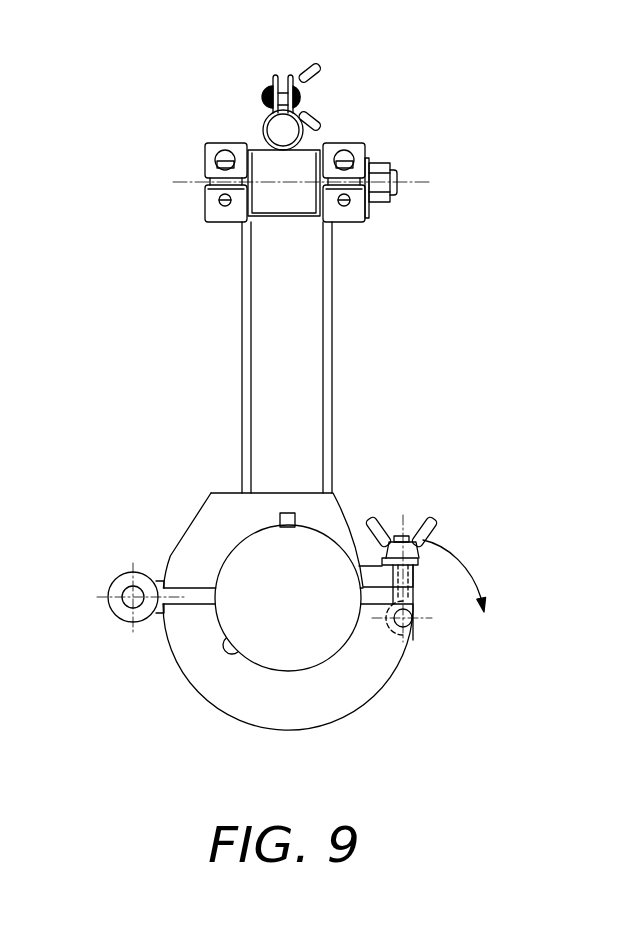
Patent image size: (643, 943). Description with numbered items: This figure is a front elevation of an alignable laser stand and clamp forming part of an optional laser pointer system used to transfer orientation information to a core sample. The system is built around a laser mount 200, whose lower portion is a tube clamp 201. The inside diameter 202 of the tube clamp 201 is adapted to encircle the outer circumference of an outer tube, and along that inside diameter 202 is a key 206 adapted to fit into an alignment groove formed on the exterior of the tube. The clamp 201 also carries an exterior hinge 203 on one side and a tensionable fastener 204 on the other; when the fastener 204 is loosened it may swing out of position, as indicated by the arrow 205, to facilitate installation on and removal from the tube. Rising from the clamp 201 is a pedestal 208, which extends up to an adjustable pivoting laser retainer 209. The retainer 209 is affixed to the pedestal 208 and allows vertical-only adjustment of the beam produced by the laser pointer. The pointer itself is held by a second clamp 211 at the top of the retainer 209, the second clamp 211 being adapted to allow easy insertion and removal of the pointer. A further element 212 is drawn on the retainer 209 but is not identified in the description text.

The laser mount 200 is at (320, 412).
The tube clamp 201 is at (363, 683).
The inside diameter 202 is at (245, 652).
The exterior hinge 203 is at (131, 600).
The tensionable fastener 204 is at (424, 538).
The arrow 205 is at (473, 572).
The key 206 is at (290, 527).
The pedestal 208 is at (263, 352).
The adjustable pivoting laser retainer 209 is at (365, 132).
The second clamp 211 is at (262, 118).
The clamp screw 212 is at (224, 160).